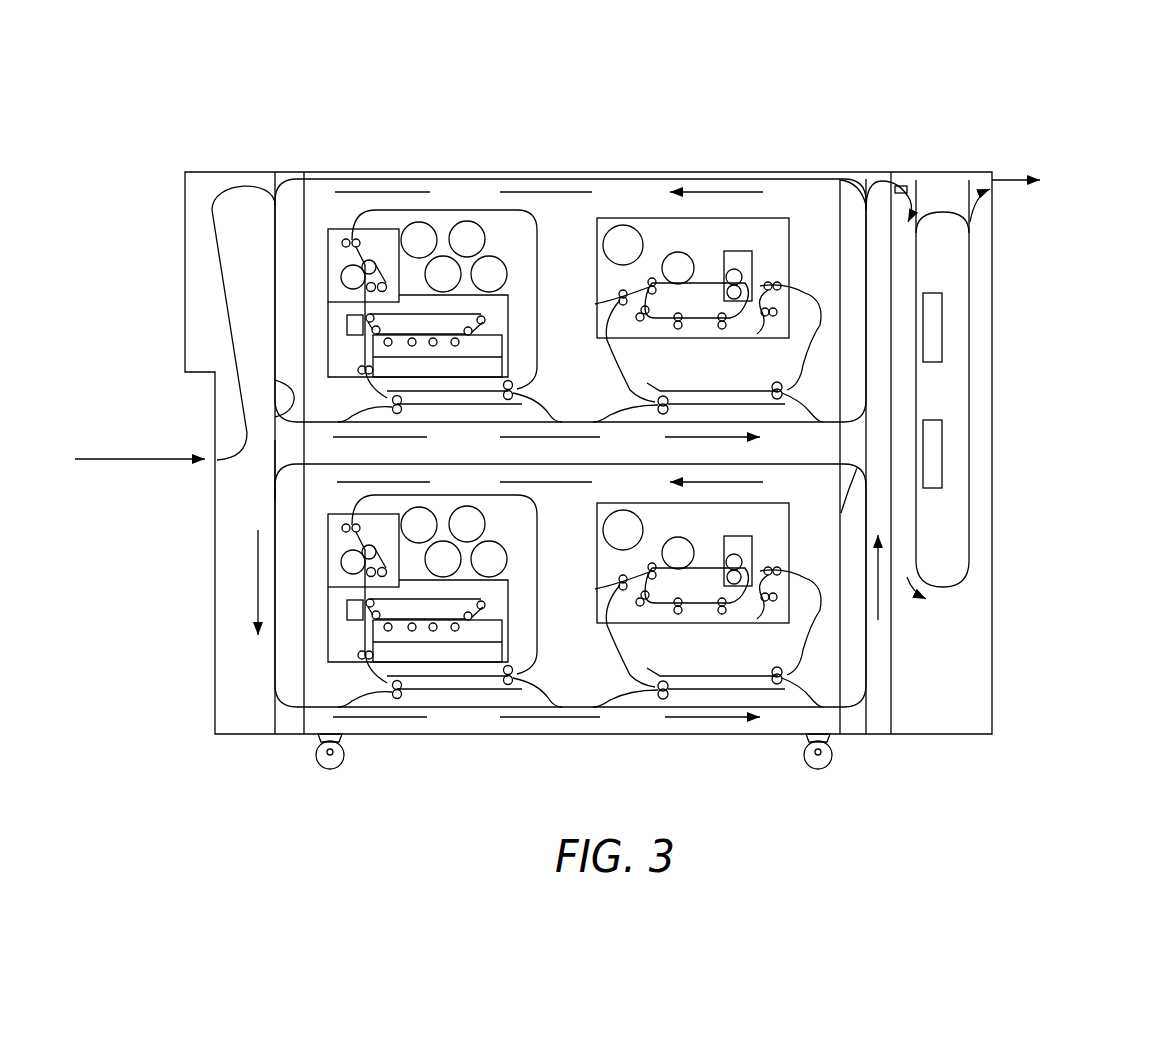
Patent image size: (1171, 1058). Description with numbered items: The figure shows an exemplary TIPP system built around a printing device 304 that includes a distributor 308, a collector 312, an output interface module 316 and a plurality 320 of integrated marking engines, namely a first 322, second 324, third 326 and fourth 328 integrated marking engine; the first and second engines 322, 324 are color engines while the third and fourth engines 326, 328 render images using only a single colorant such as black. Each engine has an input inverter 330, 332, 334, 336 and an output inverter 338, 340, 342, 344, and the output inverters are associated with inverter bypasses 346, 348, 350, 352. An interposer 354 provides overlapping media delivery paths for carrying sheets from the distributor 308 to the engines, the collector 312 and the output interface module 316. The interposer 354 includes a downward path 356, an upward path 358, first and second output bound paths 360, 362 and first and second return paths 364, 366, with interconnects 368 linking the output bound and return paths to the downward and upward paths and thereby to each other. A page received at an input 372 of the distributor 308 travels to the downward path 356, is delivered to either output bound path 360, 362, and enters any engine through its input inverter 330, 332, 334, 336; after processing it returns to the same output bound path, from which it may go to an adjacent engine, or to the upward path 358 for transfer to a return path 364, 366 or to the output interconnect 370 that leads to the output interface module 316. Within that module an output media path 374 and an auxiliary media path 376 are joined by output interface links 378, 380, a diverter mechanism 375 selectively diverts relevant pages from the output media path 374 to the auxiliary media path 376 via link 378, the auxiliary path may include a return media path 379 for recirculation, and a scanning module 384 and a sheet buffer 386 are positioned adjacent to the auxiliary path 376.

The printing device 304 is at (707, 147).
The distributor 308 is at (258, 171).
The collector 312 is at (868, 185).
The output interface module 316 is at (996, 246).
The plurality of integrated marking engines 320 is at (540, 138).
The first integrated marking engine 322 is at (328, 312).
The second integrated marking engine 324 is at (328, 632).
The third integrated marking engine 326 is at (775, 218).
The fourth integrated marking engine 328 is at (765, 502).
The input inverter 330 is at (442, 405).
The input inverter 332 is at (450, 690).
The input inverter 334 is at (762, 405).
The input inverter 336 is at (763, 690).
The output inverter 338 is at (477, 392).
The output inverter 340 is at (473, 677).
The output inverter 342 is at (694, 391).
The output inverter 344 is at (694, 676).
The inverter bypass 346 is at (540, 390).
The inverter bypass 348 is at (540, 676).
The inverter bypass 350 is at (802, 389).
The inverter bypass 352 is at (802, 674).
The interposer 354 is at (272, 660).
The downward path 356 is at (275, 487).
The upward path 358 is at (866, 662).
The first output bound path 360 is at (324, 420).
The second output bound path 362 is at (372, 708).
The first return path 364 is at (608, 179).
The second return path 366 is at (730, 460).
The interconnects 368 is at (865, 200).
The output interconnect 370 is at (866, 205).
The input 372 is at (215, 459).
The output media path 374 is at (932, 178).
The diverter mechanism 375 is at (907, 193).
The auxiliary media path 376 is at (969, 390).
The output interface link 378 is at (902, 185).
The return media path 379 is at (943, 213).
The second output interface media link 380 is at (978, 172).
The scanning module 384 is at (942, 328).
The sheet buffer 386 is at (942, 450).